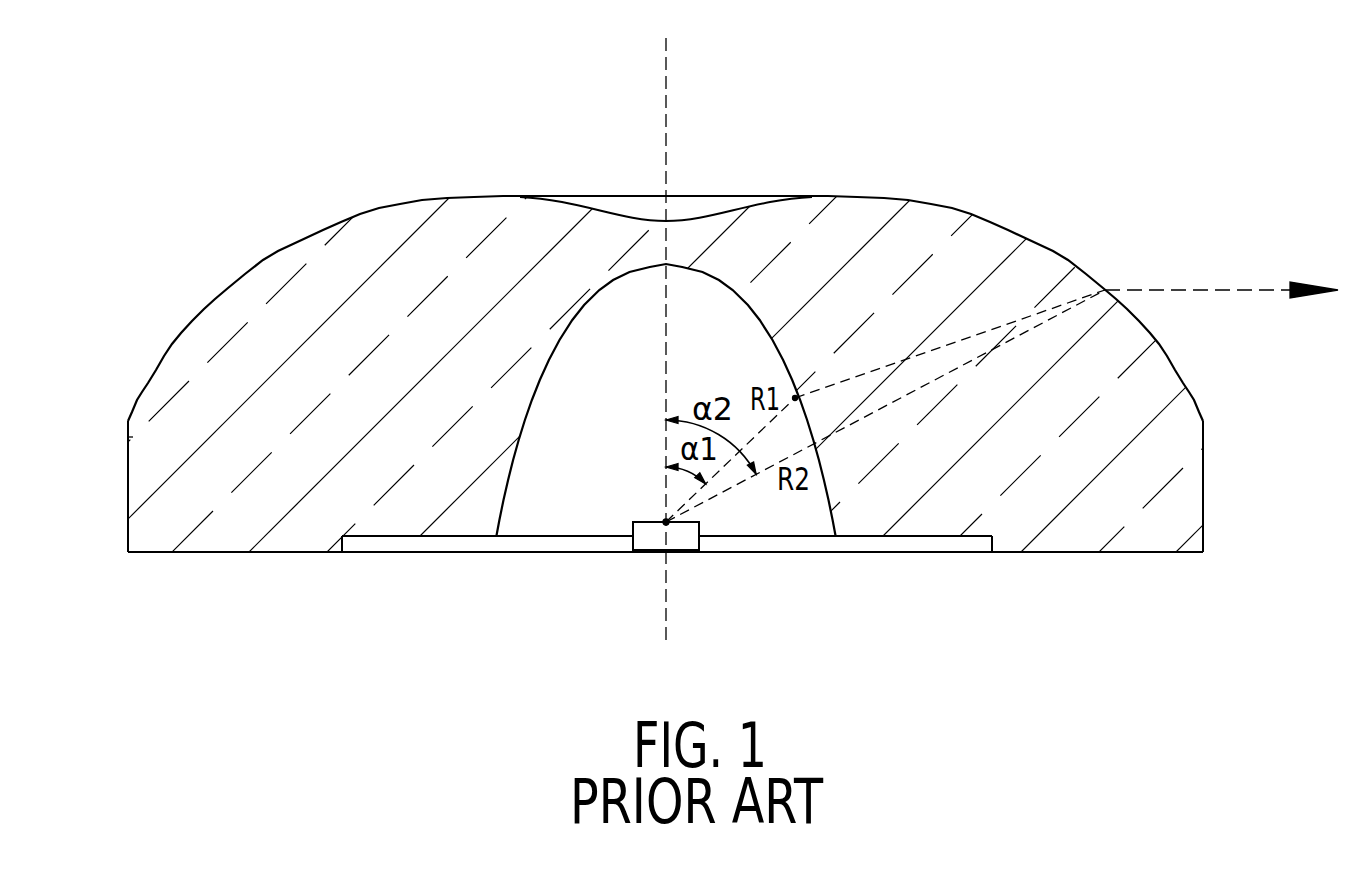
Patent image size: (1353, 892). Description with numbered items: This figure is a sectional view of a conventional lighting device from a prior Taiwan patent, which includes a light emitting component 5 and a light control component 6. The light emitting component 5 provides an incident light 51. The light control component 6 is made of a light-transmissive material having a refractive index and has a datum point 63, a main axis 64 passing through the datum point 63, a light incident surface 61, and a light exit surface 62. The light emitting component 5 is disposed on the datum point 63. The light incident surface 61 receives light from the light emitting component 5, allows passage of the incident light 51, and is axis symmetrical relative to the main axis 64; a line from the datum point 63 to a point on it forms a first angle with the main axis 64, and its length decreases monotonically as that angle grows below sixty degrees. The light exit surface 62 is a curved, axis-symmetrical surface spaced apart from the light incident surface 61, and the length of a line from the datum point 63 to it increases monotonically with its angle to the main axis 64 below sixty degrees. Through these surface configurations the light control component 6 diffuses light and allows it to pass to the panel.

The light control component 6 is at (652, 359).
The light exit surface 62 is at (183, 331).
The light incident surface 61 is at (506, 490).
The datum point 63 is at (666, 522).
The main axis 64 is at (666, 80).
The light emitting component 5 is at (690, 540).
The incident light 51 is at (961, 341).